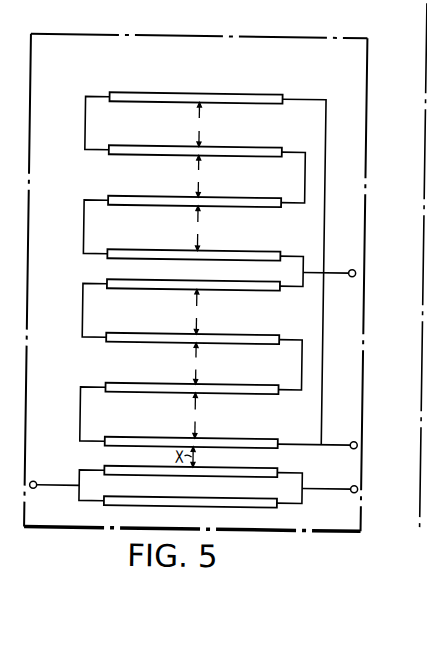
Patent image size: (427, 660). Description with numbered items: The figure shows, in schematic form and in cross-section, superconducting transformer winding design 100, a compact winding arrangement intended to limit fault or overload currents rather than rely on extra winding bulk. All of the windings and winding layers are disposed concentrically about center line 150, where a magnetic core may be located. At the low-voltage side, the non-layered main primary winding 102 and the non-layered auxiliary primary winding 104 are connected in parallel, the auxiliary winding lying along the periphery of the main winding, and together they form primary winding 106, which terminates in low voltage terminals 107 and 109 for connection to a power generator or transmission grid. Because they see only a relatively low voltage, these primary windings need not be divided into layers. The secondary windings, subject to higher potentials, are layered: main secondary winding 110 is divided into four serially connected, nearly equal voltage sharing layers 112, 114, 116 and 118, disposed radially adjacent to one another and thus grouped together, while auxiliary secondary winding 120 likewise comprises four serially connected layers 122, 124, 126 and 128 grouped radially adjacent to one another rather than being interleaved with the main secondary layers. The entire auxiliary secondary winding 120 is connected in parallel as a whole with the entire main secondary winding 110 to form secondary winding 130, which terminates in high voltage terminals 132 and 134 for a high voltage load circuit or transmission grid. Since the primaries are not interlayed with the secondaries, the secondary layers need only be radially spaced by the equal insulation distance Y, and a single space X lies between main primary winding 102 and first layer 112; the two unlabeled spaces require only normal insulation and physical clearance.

The superconducting transformer winding design 100 is at (195, 283).
The main primary winding 102 is at (268, 468).
The auxiliary primary winding 104 is at (268, 507).
The primary winding 106 is at (317, 486).
The low voltage terminal 107 is at (354, 490).
The low voltage terminal 109 is at (38, 484).
The main secondary winding 110 is at (191, 364).
The first layer of main secondary winding 112 is at (270, 438).
The layer of main secondary winding 114 is at (268, 384).
The layer of main secondary winding 116 is at (258, 334).
The layer of main secondary winding 118 is at (234, 290).
The auxiliary secondary winding 120 is at (204, 255).
The layer of auxiliary secondary winding 122 is at (266, 250).
The layer of auxiliary secondary winding 124 is at (262, 196).
The layer of auxiliary secondary winding 126 is at (266, 146).
The layer of auxiliary secondary winding 128 is at (265, 93).
The secondary winding 130 is at (318, 272).
The high voltage terminal 132 is at (354, 258).
The high voltage terminal 134 is at (354, 440).
The center line 150 is at (72, 527).